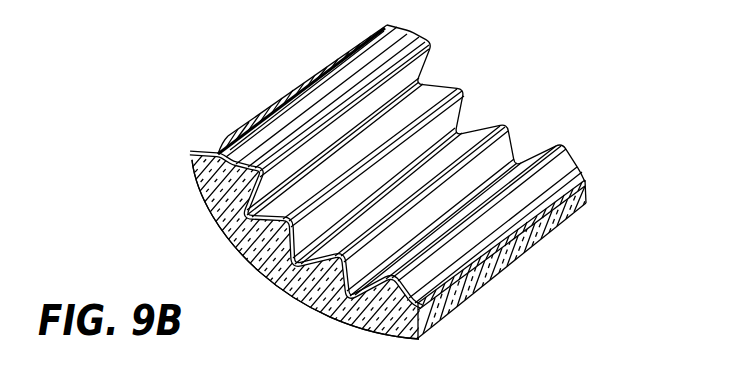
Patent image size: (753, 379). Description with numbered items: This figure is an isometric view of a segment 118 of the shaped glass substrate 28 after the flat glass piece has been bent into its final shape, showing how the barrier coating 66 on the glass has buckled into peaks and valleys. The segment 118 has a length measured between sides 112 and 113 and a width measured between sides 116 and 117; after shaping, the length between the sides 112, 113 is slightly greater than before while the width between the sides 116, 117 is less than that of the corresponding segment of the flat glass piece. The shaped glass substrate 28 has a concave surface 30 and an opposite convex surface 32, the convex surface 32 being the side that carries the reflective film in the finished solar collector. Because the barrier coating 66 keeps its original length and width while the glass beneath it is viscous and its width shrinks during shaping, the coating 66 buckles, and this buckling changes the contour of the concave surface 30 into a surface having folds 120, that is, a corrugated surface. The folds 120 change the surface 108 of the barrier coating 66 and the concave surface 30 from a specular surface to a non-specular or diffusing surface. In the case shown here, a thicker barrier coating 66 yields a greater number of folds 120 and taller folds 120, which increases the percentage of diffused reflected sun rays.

The segment of the shaped glass substrate 118 is at (288, 84).
The side 116 is at (226, 136).
The convex surface 32 is at (204, 201).
The concave surface 30 is at (257, 274).
The side 112 is at (252, 242).
The folds 120 is at (373, 330).
The surface of the barrier coating 108 is at (460, 119).
The side 113 is at (587, 193).
The barrier coating 66 is at (512, 242).
The shaped glass substrate 28 is at (478, 288).
The side 117 is at (458, 303).